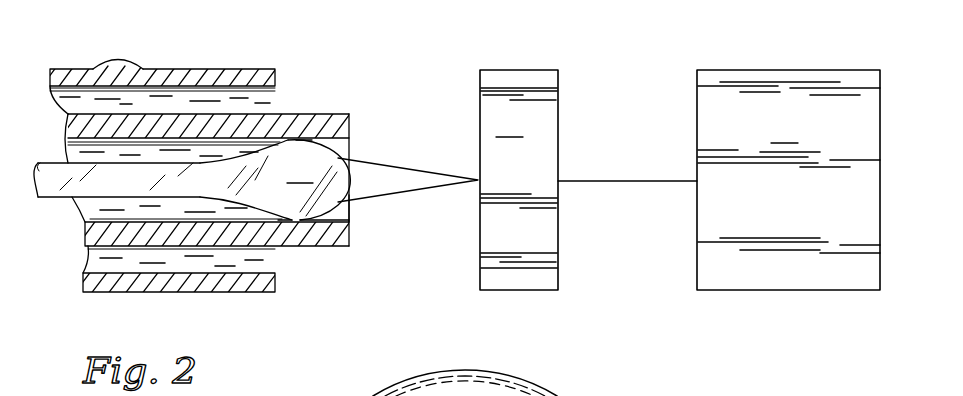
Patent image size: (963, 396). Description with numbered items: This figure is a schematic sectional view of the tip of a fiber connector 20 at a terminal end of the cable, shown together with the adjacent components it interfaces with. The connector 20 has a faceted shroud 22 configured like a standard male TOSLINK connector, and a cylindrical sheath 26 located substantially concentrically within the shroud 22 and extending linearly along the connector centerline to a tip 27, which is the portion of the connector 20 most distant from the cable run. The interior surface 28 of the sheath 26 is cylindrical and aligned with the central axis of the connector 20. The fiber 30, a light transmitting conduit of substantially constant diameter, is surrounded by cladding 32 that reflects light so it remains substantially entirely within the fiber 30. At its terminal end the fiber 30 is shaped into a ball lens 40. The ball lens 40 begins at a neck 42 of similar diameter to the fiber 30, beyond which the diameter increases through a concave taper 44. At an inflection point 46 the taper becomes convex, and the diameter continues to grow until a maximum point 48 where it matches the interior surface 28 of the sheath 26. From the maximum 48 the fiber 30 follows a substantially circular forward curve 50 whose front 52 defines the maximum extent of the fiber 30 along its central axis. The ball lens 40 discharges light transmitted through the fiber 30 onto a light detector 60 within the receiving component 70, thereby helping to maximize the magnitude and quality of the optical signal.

The connector 20 is at (95, 54).
The shroud 22 is at (167, 69).
The sheath 26 is at (343, 114).
The tip 27 is at (350, 208).
The interior surface 28 is at (115, 221).
The fiber 30 is at (62, 170).
The cladding 32 is at (56, 197).
The ball lens 40 is at (318, 180).
The neck 42 is at (178, 198).
The taper 44 is at (229, 158).
The inflection point 46 is at (283, 221).
The maximum point 48 is at (304, 139).
The forward curve 50 is at (325, 220).
The front 52 is at (348, 180).
The light detector 60 is at (588, 180).
The receiving component 70 is at (788, 180).